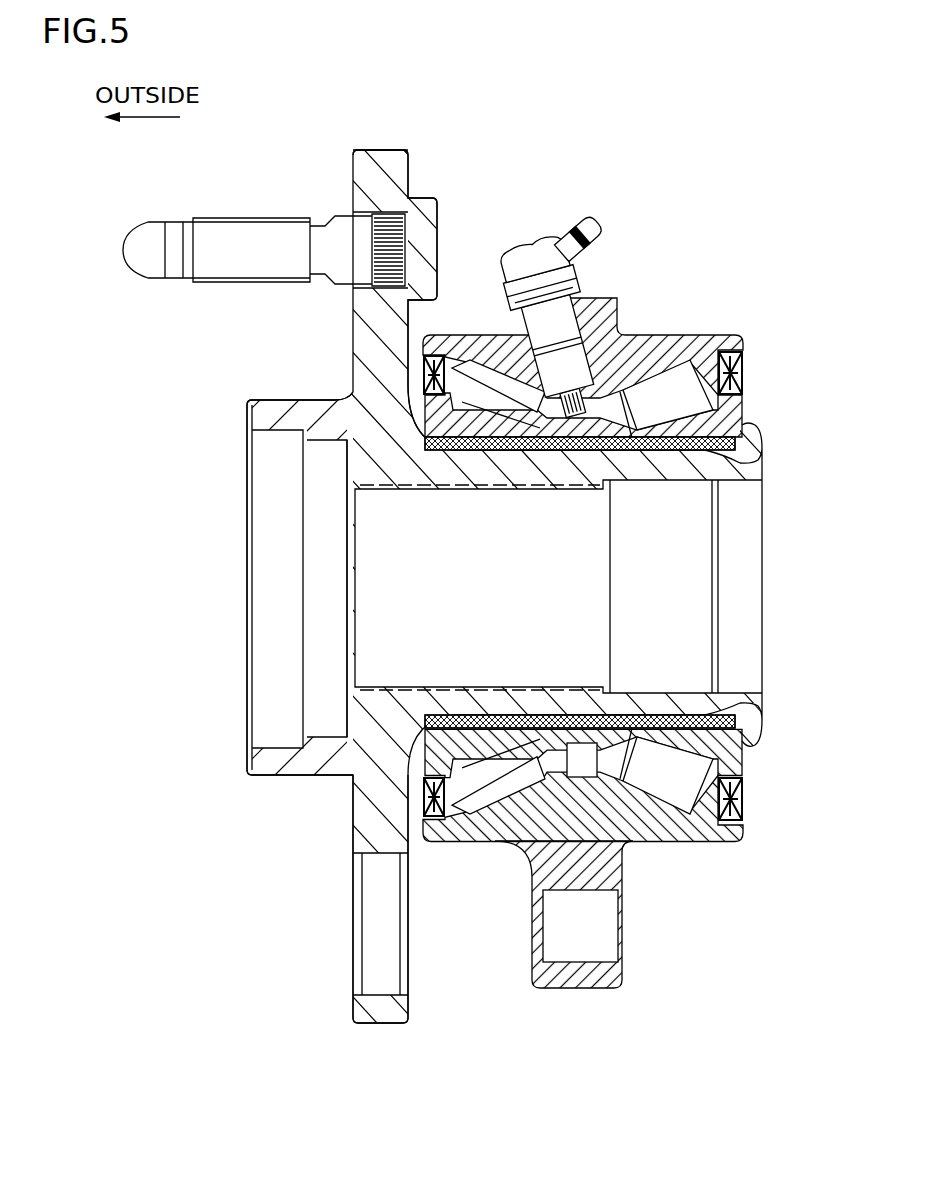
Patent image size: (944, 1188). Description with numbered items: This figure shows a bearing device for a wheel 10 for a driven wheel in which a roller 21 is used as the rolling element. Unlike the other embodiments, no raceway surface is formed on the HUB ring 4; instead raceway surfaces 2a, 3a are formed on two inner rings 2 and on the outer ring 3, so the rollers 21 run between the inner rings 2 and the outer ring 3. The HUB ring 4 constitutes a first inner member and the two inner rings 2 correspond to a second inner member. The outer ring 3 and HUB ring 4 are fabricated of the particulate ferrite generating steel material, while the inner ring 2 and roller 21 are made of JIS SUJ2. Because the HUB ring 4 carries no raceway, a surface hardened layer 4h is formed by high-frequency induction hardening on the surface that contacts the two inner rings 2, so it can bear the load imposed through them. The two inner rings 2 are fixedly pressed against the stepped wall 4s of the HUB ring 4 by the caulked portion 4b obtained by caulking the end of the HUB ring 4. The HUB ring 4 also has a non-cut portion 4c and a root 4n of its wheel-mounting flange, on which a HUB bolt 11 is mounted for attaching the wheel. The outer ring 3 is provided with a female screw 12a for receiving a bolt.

The inner ring 2 is at (467, 407).
The raceway surface 2a is at (740, 450).
The outer ring 3 is at (641, 347).
The raceway surface 3a is at (700, 335).
The HUB ring 4 is at (440, 473).
The caulked portion 4b is at (762, 458).
The non-cut portion 4c is at (410, 323).
The surface hardened layer 4h is at (512, 420).
The root of wheel-mounting flange 4n is at (367, 325).
The HUB ring stepped wall 4s is at (445, 428).
The bearing device for a wheel 10 is at (712, 111).
The HUB bolt 11 is at (258, 233).
The female screw 12a is at (595, 930).
The roller 21 is at (672, 387).